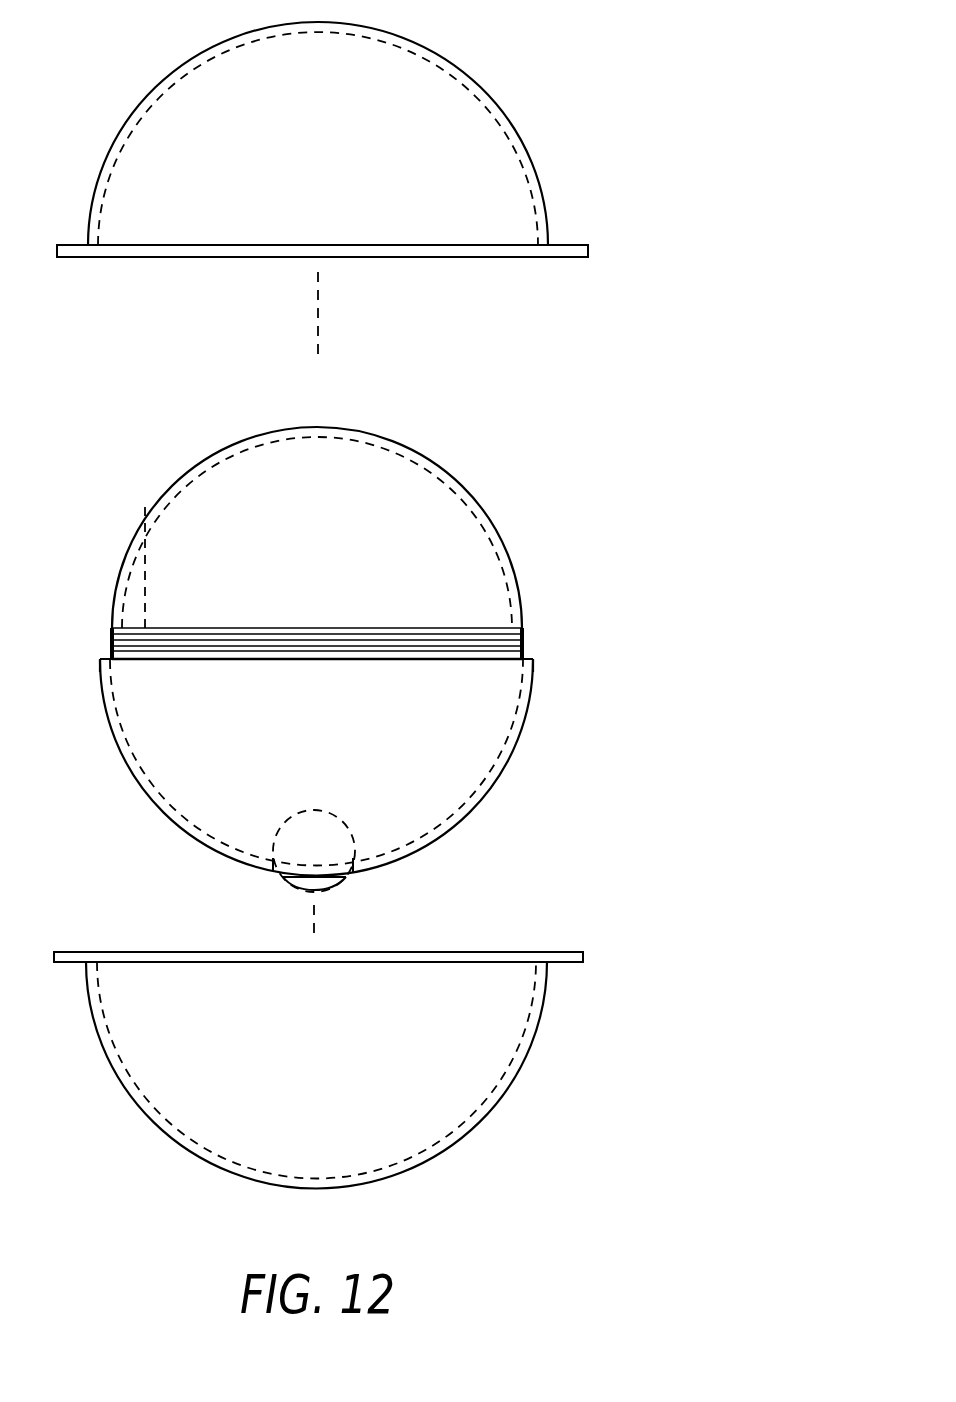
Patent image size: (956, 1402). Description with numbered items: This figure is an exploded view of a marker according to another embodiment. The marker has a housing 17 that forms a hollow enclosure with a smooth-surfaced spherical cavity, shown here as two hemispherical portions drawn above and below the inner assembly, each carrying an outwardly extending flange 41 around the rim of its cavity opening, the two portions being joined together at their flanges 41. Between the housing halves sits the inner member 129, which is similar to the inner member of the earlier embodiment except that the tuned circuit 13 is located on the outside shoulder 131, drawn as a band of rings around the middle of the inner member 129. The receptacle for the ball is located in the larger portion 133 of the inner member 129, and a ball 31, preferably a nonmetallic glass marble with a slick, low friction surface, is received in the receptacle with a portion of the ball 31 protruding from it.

The housing 17 is at (480, 83).
The flange 41 is at (573, 245).
The inner member 129 is at (472, 488).
The tuned circuit 13 is at (525, 628).
The outside shoulder 131 is at (533, 660).
The larger portion 133 is at (477, 810).
The ball 31 is at (328, 888).